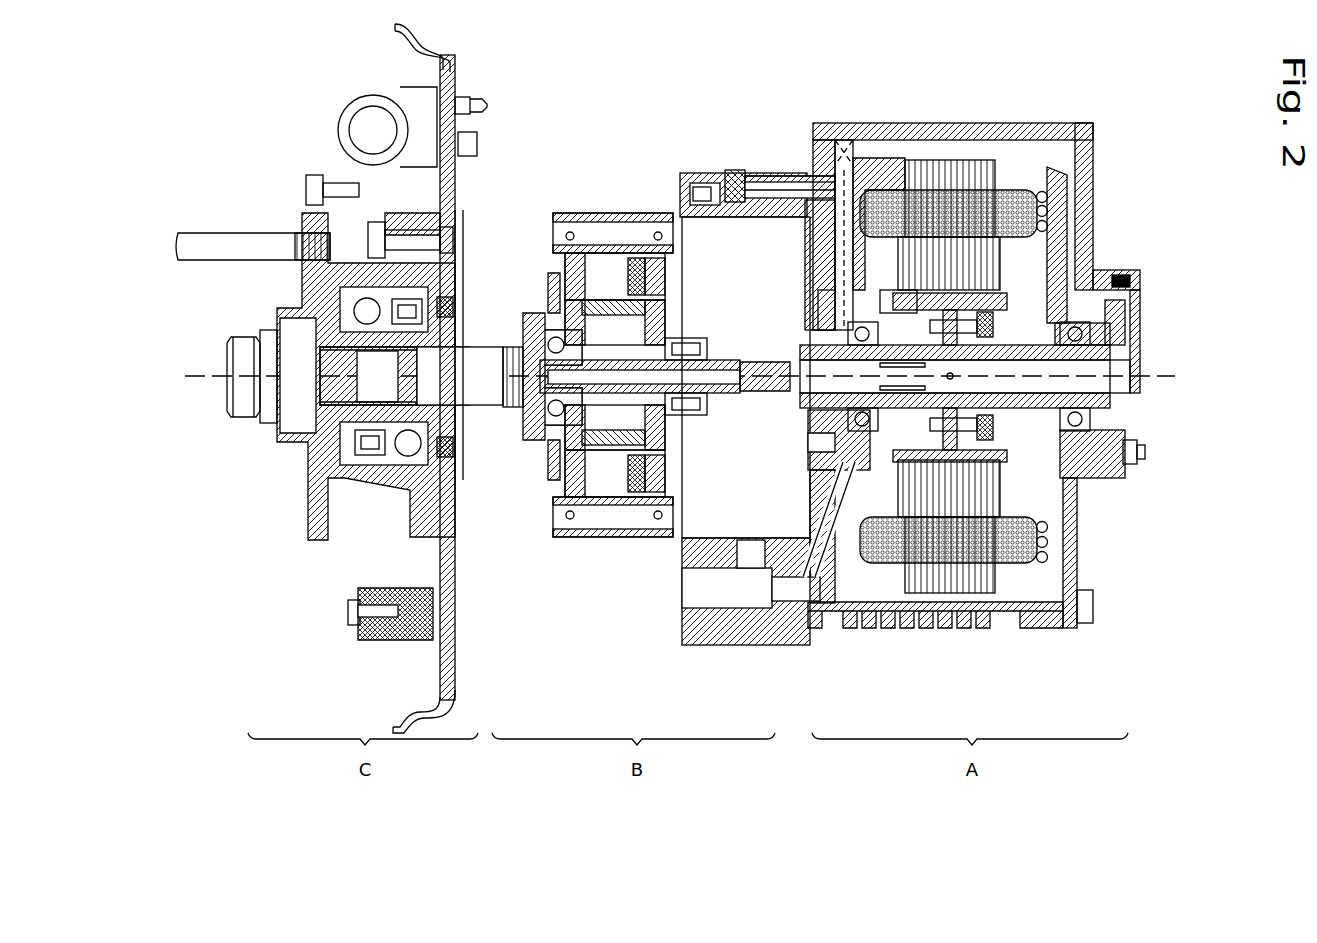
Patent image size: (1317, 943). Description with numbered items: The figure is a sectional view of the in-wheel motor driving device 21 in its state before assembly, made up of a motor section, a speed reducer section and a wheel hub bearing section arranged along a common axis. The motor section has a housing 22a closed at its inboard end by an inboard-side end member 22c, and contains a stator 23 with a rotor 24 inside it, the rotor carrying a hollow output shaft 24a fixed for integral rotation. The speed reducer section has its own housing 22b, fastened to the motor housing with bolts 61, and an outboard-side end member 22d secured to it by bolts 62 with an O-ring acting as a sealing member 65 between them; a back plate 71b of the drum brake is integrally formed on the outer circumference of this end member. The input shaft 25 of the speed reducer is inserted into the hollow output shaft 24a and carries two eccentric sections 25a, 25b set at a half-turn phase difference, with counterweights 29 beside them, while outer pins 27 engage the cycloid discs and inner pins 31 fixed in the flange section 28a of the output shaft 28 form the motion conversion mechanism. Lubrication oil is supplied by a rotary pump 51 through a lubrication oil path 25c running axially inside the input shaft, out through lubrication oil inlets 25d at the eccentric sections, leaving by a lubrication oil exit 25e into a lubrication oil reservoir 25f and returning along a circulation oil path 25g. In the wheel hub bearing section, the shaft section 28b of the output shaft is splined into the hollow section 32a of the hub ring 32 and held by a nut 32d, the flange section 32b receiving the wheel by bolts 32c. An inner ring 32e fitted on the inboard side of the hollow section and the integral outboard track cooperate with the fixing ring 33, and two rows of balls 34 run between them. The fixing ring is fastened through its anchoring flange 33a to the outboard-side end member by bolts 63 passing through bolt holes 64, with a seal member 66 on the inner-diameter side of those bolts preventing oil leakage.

The in-wheel motor driving device 21 is at (607, 105).
The housing of the motor section 22a is at (942, 132).
The housing of the speed reducer section 22b is at (772, 170).
The inboard-side end member 22c is at (1090, 228).
The outboard-side end member 22d is at (480, 215).
The stator 23 is at (888, 262).
The rotor 24 is at (808, 175).
The hollow output shaft 24a is at (1037, 335).
The input shaft 25 is at (728, 398).
The eccentric section 25a is at (640, 462).
The eccentric section 25b is at (580, 345).
The lubrication oil path 25c is at (990, 380).
The lubrication oil inlet 25d is at (640, 400).
The lubrication oil exit 25e is at (752, 562).
The lubrication oil reservoir 25f is at (728, 592).
The circulation oil path 25g is at (982, 152).
The outer pins 27 is at (618, 520).
The output shaft 28 is at (482, 470).
The flange section 28a is at (586, 394).
The shaft section 28b is at (566, 370).
The counterweights 29 is at (672, 330).
The inner pins 31 is at (660, 480).
The hub ring 32 is at (300, 462).
The hollow section 32a is at (330, 360).
The flange section 32b is at (315, 222).
The bolts 32c is at (232, 242).
The nut 32d is at (250, 385).
The inner ring 32e is at (450, 330).
The fixing ring 33 is at (378, 482).
The anchoring flange 33a is at (390, 215).
The balls 34 is at (463, 535).
The rotary pump 51 is at (812, 315).
The bolts 61 is at (722, 185).
The bolts 62 is at (302, 190).
The bolts 63 is at (372, 240).
The bolt holes 64 is at (468, 210).
The sealing member 65 is at (668, 212).
The seal member 66 is at (463, 270).
The back plate 71b is at (445, 45).